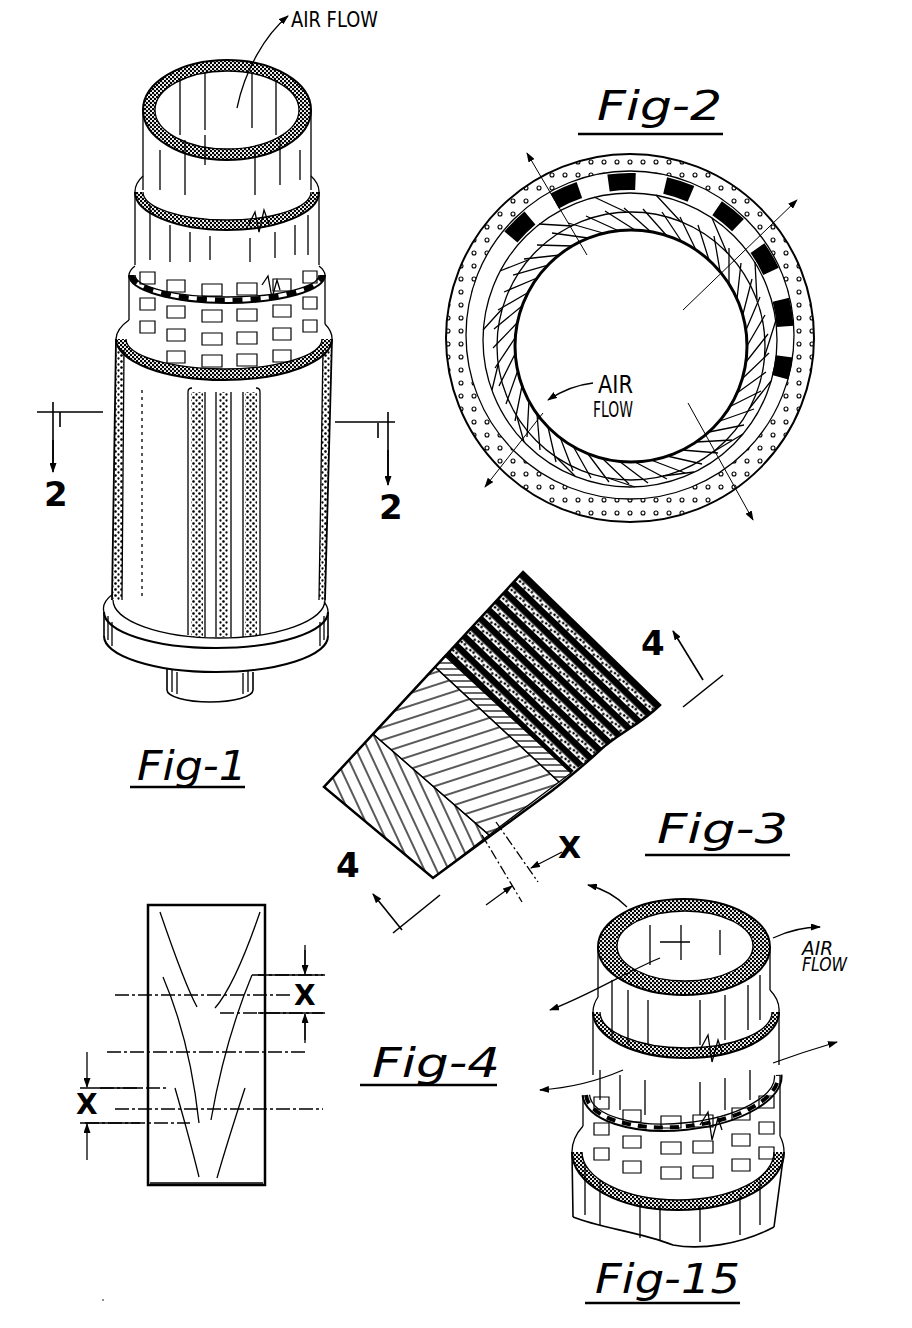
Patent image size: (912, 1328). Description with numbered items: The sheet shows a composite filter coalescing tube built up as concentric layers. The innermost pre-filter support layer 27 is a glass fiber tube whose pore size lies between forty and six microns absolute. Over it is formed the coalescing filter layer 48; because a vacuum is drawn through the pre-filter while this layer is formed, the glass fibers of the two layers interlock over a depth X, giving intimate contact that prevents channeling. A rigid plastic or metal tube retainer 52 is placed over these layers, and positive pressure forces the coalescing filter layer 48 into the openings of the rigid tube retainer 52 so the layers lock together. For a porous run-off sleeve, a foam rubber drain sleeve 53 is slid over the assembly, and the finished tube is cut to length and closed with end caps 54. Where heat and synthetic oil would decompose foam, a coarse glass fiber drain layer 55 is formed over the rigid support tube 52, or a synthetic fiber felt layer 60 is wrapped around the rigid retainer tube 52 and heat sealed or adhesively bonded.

In FIG. 1, the pre-filter support layer 27 is at (155, 88).
In FIG. 2, the pre-filter support layer 27 is at (740, 350).
In FIG. 3, the pre-filter support layer 27 is at (350, 757).
In FIG. 4, the pre-filter support layer 27 is at (256, 1167).
In FIG. 15, the pre-filter support layer 27 is at (753, 912).
In FIG. 1, the coalescing filter layer 48 is at (319, 206).
In FIG. 2, the coalescing filter layer 48 is at (532, 258).
In FIG. 3, the coalescing filter layer 48 is at (400, 693).
In FIG. 4, the coalescing filter layer 48 is at (265, 1070).
In FIG. 15, the coalescing filter layer 48 is at (779, 1003).
In FIG. 1, the rigid tube retainer 52 is at (128, 273).
In FIG. 2, the rigid tube retainer 52 is at (518, 218).
In FIG. 3, the rigid tube retainer 52 is at (432, 663).
In FIG. 15, the rigid tube retainer 52 is at (777, 1080).
In FIG. 1, the foam rubber drain sleeve 53 is at (332, 375).
In FIG. 2, the foam rubber drain sleeve 53 is at (812, 332).
In FIG. 3, the foam rubber drain sleeve 53 is at (507, 583).
In FIG. 1, the end cap 54 is at (138, 652).
In FIG. 4, the glass fiber drain layer 55 is at (153, 940).
In FIG. 15, the synthetic fiber felt layer 60 is at (773, 1185).